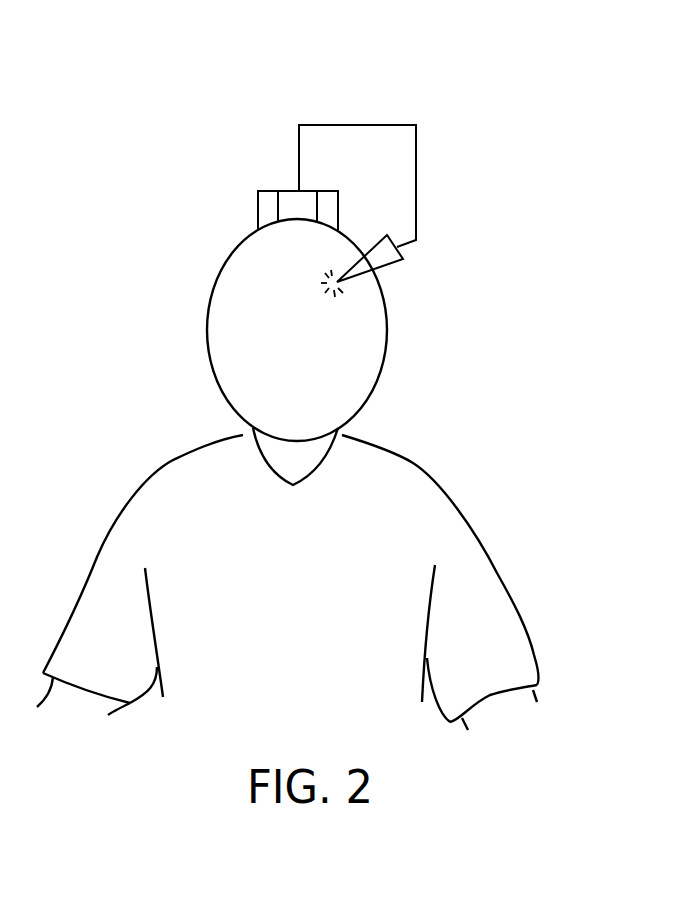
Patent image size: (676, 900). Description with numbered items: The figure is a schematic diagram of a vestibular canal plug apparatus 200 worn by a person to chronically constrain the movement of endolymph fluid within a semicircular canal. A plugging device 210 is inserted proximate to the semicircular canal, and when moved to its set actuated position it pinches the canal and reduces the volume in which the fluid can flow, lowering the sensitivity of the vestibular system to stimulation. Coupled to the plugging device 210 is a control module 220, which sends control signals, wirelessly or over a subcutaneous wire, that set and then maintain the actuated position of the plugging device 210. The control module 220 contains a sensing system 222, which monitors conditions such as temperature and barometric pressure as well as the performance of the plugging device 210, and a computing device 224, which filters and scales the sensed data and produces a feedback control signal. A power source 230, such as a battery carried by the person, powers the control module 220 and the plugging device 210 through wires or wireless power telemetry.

The vestibular canal plug apparatus 200 is at (237, 100).
The plugging device 210 is at (393, 265).
The control module 220 is at (339, 212).
The sensing system 222 is at (293, 207).
The computing device 224 is at (330, 203).
The power source 230 is at (267, 208).